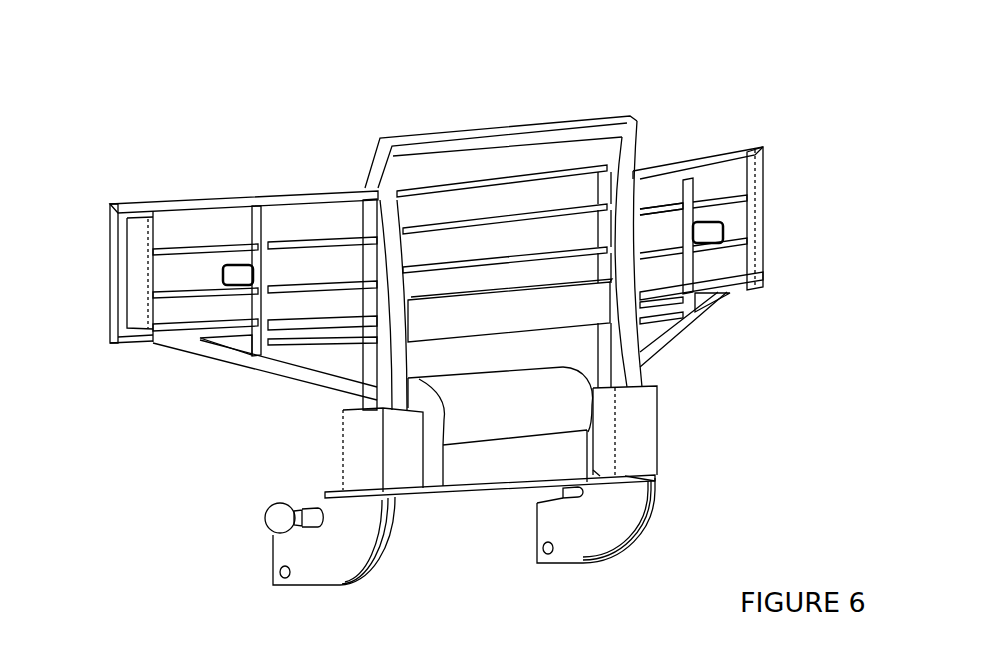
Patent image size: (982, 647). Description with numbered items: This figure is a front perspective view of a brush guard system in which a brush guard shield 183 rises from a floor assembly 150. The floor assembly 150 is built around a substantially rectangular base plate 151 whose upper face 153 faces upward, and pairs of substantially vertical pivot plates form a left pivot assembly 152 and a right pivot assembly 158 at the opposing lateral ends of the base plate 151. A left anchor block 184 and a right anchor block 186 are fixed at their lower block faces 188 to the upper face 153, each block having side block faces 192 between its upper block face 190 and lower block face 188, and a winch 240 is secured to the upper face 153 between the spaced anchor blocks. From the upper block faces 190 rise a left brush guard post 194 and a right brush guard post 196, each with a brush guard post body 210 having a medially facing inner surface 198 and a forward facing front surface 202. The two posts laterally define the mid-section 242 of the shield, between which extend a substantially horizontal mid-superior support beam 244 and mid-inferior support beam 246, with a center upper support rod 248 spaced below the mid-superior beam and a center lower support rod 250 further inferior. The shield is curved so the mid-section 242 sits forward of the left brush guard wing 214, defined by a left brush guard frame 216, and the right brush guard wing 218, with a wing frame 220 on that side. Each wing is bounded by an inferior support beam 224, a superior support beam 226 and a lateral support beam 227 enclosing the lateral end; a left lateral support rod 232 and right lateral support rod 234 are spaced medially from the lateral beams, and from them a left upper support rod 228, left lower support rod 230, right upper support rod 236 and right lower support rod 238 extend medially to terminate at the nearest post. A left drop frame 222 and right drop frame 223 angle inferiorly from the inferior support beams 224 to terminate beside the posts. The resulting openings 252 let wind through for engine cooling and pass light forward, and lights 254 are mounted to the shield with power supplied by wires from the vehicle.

The floor assembly 150 is at (227, 523).
The base plate 151 is at (467, 500).
The left pivot assembly 152 is at (638, 542).
The upper face 153 is at (589, 468).
The right pivot assembly 158 is at (370, 580).
The brush guard shield 183 is at (528, 84).
The left anchor block 184 is at (657, 440).
The right anchor block 186 is at (338, 450).
The lower block face 188 is at (632, 478).
The upper block face 190 is at (650, 387).
The side block faces 192 is at (360, 465).
The left brush guard post 194 is at (645, 333).
The right brush guard post 196 is at (357, 217).
The inner surface 198 is at (613, 355).
The front surface 202 is at (400, 366).
The brush guard post body 210 is at (398, 283).
The left brush guard wing 214 is at (681, 147).
The left brush guard frame 216 is at (737, 143).
The right brush guard wing 218 is at (202, 188).
The left wing 220 is at (132, 200).
The left drop frame 222 is at (737, 302).
The right drop frame 223 is at (208, 362).
The inferior support beam 224 is at (217, 333).
The superior support beam 226 is at (233, 203).
The lateral support beam 227 is at (107, 312).
The left upper support rod 228 is at (730, 197).
The left lower support rod 230 is at (728, 238).
The left lateral support rod 232 is at (748, 207).
The right lateral support rod 234 is at (165, 262).
The right upper support rod 236 is at (170, 238).
The right lower support rod 238 is at (173, 288).
The winch 240 is at (520, 465).
The mid-section 242 is at (457, 170).
The mid-superior support beam 244 is at (553, 190).
The mid-inferior support beam 246 is at (590, 307).
The center upper support rod 248 is at (440, 222).
The center lower support rod 250 is at (427, 260).
The openings 252 is at (500, 152).
The lights 254 is at (235, 262).